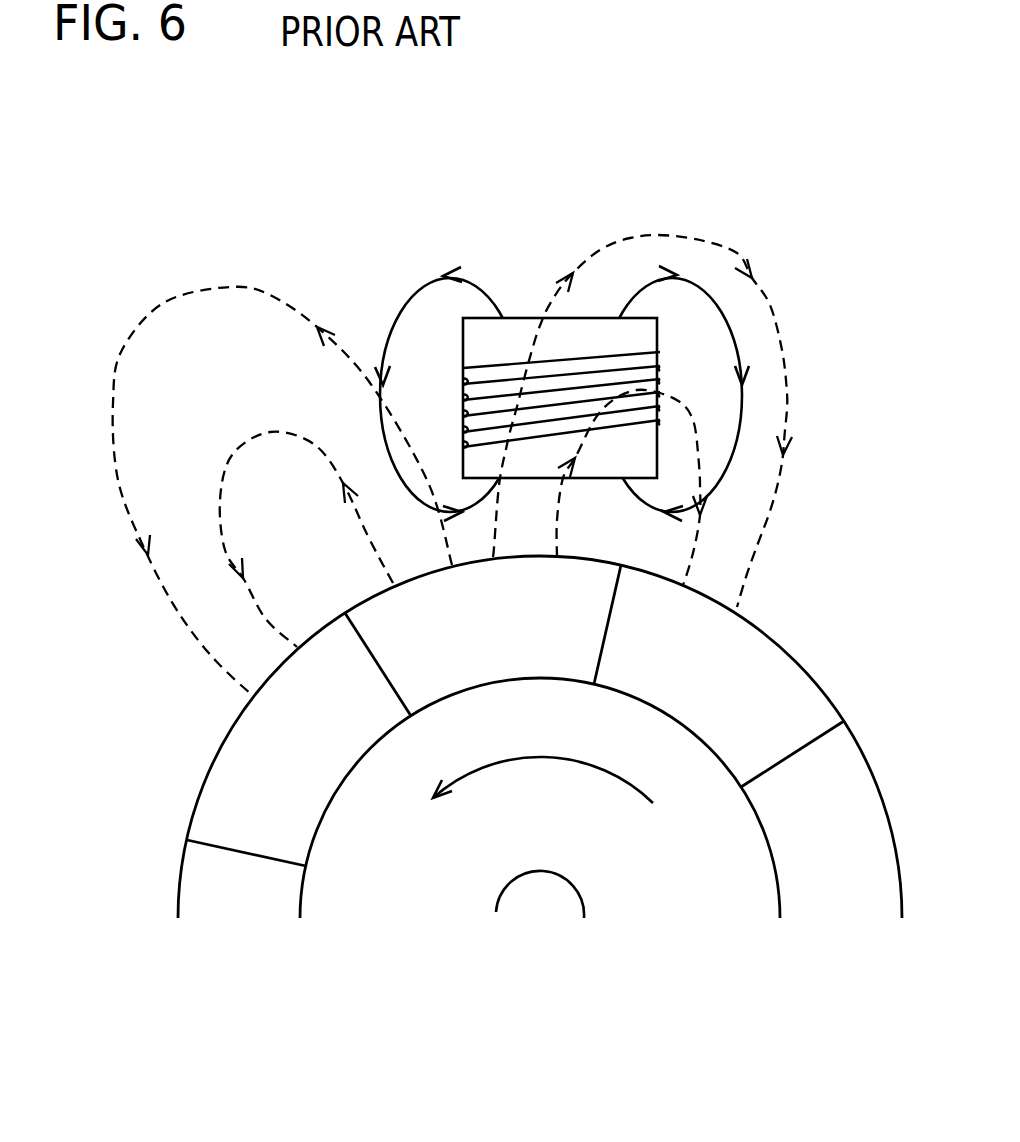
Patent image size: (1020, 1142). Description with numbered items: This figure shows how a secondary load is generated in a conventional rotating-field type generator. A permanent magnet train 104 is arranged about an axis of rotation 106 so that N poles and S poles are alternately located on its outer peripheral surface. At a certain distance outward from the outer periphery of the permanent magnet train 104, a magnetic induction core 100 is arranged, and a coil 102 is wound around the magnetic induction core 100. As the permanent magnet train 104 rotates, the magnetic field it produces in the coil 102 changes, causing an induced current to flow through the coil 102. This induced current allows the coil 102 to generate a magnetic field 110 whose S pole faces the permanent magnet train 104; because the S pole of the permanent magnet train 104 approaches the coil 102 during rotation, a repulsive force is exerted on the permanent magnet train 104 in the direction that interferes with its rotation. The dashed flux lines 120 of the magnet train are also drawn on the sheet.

The magnetic induction core 100 is at (523, 317).
The coil 102 is at (657, 355).
The permanent magnet train 104 is at (800, 665).
The axis of rotation 106 is at (584, 908).
The magnetic field 110 is at (409, 300).
The magnetic flux of rotor magnet 120 is at (182, 295).